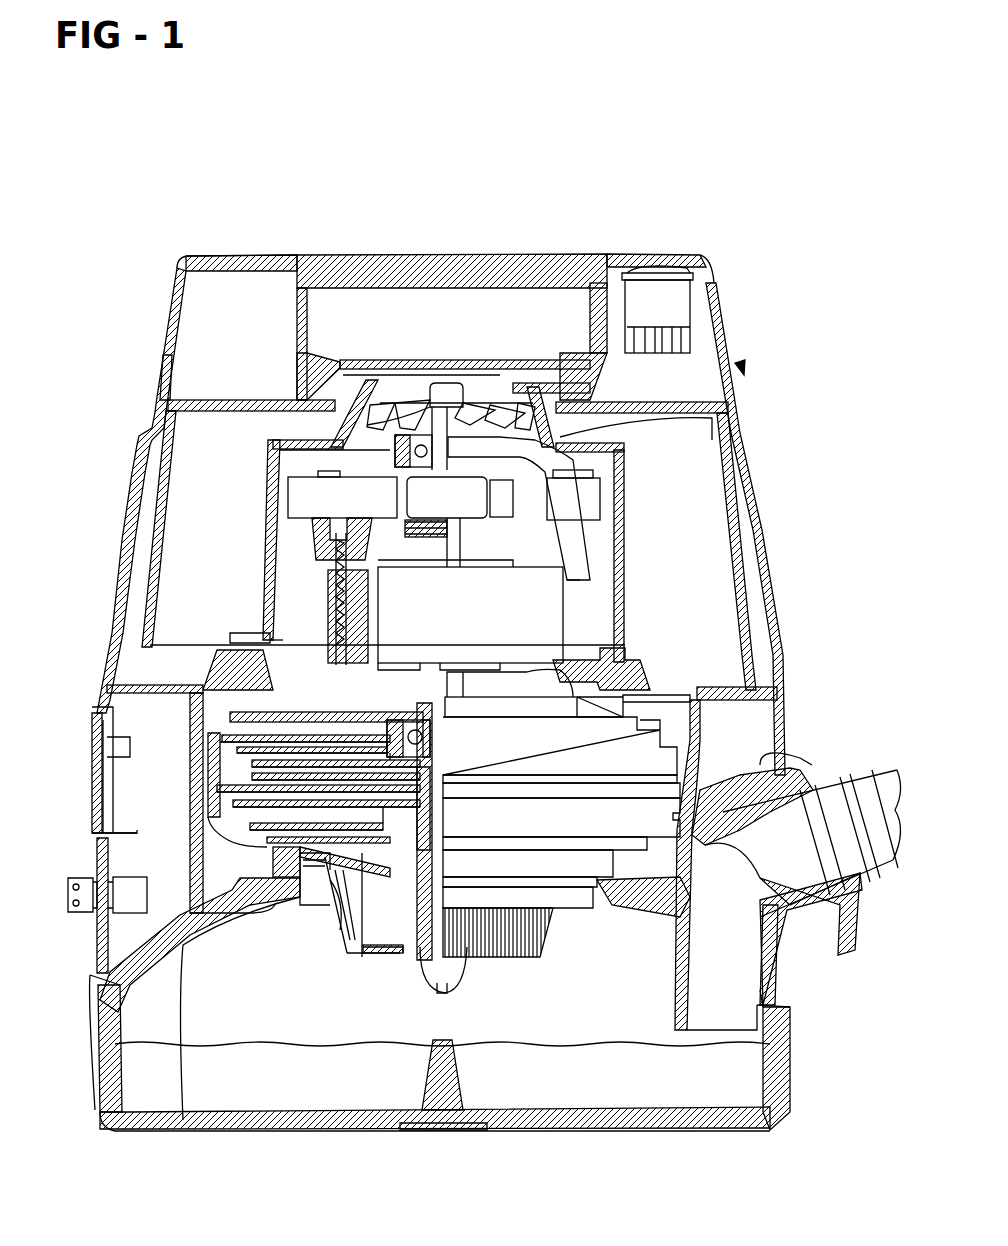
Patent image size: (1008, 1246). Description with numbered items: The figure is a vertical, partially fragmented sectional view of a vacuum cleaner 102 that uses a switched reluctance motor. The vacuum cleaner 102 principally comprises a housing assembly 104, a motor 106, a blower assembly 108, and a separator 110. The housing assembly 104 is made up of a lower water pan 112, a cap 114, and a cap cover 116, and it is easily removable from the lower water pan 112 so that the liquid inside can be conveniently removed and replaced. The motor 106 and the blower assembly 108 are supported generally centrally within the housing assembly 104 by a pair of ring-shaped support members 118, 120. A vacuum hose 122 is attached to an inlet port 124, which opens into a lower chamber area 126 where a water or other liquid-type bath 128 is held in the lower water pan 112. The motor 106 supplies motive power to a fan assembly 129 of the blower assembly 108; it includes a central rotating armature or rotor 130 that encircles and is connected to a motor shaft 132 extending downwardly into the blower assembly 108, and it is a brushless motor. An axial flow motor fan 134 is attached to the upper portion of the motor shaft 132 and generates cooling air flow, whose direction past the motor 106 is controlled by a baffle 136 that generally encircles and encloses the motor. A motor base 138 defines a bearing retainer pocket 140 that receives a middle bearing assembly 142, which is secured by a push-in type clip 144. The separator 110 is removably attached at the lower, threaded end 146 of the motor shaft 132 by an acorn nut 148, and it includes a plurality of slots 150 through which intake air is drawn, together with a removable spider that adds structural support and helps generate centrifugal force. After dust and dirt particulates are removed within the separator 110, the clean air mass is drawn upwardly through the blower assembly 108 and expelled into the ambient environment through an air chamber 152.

The vacuum cleaner 102 is at (824, 149).
The housing assembly 104 is at (762, 488).
The motor 106 is at (583, 546).
The blower assembly 108 is at (643, 736).
The separator 110 is at (543, 947).
The lower water pan 112 is at (783, 1067).
The cap 114 is at (672, 405).
The cap cover 116 is at (742, 368).
The ring-shaped support member 118 is at (215, 665).
The ring-shaped support member 120 is at (157, 925).
The vacuum hose 122 is at (852, 763).
The inlet port 124 is at (727, 970).
The lower chamber area 126 is at (138, 1032).
The liquid bath 128 is at (225, 1090).
The fan assembly 129 is at (280, 817).
The rotor 130 is at (400, 597).
The motor shaft 132 is at (455, 395).
The axial flow motor fan 134 is at (495, 408).
The baffle 136 is at (726, 428).
The motor base 138 is at (583, 685).
The bearing retainer pocket 140 is at (300, 742).
The middle bearing assembly 142 is at (330, 728).
The push-in type clip 144 is at (305, 718).
The threaded end 146 is at (357, 950).
The acorn nut 148 is at (380, 950).
The slots 150 is at (518, 960).
The air chamber 152 is at (345, 957).